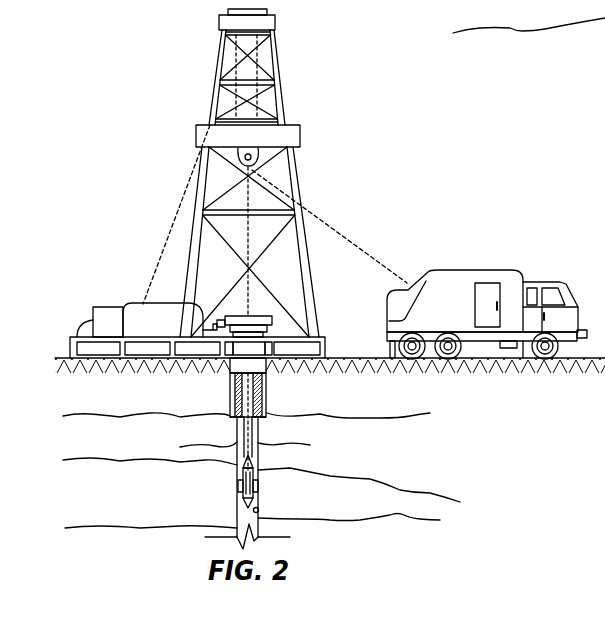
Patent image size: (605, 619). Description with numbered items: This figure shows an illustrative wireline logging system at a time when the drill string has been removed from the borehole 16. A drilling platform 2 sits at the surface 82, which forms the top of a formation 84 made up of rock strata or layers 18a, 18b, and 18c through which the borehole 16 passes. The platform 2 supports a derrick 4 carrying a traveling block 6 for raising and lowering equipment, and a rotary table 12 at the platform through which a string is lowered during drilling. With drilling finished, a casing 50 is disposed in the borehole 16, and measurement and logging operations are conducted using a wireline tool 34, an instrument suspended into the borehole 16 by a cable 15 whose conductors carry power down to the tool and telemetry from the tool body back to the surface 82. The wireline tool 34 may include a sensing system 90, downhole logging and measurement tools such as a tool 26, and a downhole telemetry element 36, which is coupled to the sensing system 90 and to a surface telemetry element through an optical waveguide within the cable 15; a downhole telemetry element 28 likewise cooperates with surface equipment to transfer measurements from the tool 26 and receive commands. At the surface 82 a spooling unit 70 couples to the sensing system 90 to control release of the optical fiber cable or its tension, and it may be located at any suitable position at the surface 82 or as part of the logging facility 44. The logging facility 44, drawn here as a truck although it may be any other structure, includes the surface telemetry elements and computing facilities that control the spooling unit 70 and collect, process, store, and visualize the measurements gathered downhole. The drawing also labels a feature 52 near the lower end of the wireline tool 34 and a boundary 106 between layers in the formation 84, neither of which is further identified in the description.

The drilling platform 2 is at (326, 351).
The derrick 4 is at (320, 288).
The traveling block 6 is at (251, 156).
The rotary table 12 is at (273, 321).
The cable 15 is at (232, 420).
The borehole 16 is at (259, 433).
The rock strata or layers 18a is at (420, 402).
The rock strata or layers 18b is at (103, 450).
The rock strata or layers 18c is at (102, 512).
The tool 26 is at (529, 16).
The downhole telemetry element 28 is at (254, 481).
The wireline tool 34 is at (244, 466).
The downhole telemetry element 36 is at (239, 488).
The logging facility 44 is at (467, 270).
The casing 50 is at (237, 428).
The sensor 52 is at (259, 509).
The spooling unit 70 is at (107, 306).
The surface 82 is at (62, 357).
The formation 84 is at (513, 416).
The sensing system 90 is at (239, 386).
The formation boundary 106 is at (310, 445).